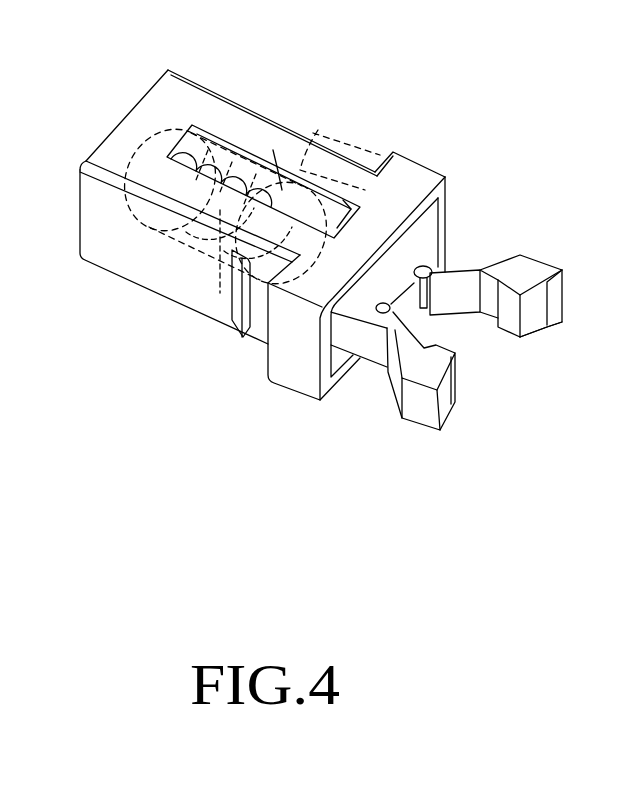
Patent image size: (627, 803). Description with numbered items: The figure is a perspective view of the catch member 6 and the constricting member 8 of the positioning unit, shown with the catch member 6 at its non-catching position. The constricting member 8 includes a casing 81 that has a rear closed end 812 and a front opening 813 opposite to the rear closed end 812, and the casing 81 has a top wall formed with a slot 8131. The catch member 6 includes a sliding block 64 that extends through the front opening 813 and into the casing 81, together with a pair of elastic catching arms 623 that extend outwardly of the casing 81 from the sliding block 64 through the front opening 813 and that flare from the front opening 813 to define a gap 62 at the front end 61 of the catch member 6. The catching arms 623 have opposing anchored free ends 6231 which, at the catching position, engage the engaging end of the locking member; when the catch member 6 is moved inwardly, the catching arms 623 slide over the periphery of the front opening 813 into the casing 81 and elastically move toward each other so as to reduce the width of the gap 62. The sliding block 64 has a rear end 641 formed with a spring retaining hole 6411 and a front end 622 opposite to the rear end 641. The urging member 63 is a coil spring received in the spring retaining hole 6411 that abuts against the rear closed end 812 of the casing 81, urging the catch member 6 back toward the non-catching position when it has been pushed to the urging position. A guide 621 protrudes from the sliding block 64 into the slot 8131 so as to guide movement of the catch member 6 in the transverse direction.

The catch member 6 is at (404, 430).
The front end 61 is at (445, 423).
The gap 62 is at (468, 360).
The guide 621 is at (343, 200).
The front end 622 is at (413, 317).
The elastic catching arms 623 is at (548, 262).
The anchored free ends 6231 is at (527, 320).
The urging member 63 is at (210, 150).
The sliding block 64 is at (403, 260).
The rear end 641 is at (283, 193).
The spring retaining hole 6411 is at (318, 130).
The constricting member 8 is at (441, 170).
The casing 81 is at (403, 160).
The rear closed end 812 is at (122, 114).
The front opening 813 is at (342, 353).
The slot 8131 is at (237, 182).